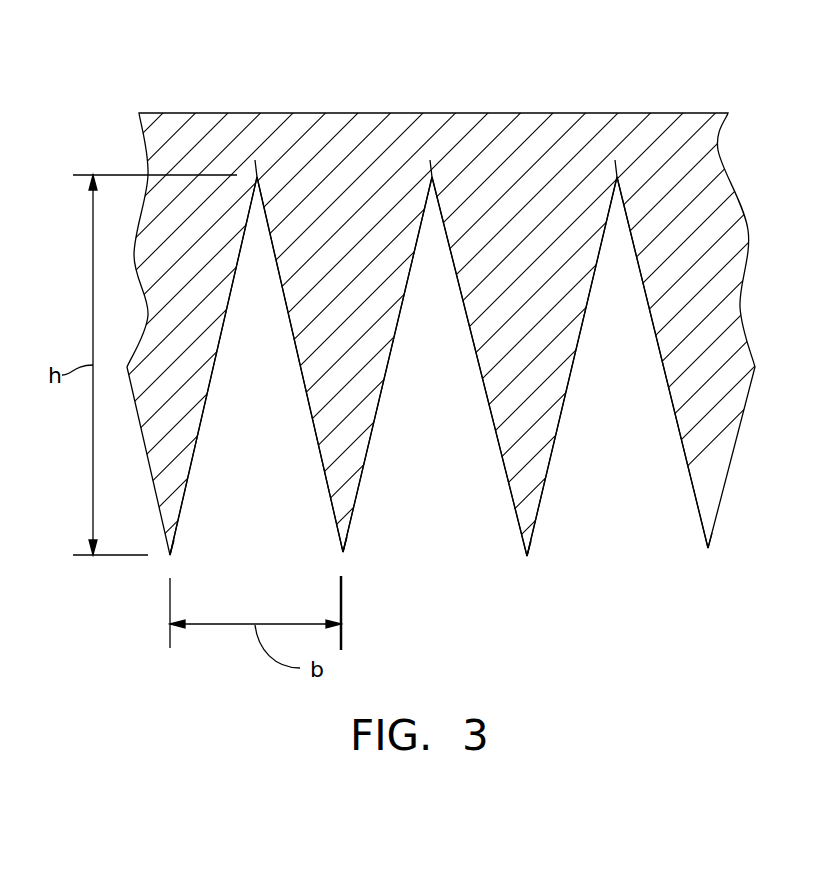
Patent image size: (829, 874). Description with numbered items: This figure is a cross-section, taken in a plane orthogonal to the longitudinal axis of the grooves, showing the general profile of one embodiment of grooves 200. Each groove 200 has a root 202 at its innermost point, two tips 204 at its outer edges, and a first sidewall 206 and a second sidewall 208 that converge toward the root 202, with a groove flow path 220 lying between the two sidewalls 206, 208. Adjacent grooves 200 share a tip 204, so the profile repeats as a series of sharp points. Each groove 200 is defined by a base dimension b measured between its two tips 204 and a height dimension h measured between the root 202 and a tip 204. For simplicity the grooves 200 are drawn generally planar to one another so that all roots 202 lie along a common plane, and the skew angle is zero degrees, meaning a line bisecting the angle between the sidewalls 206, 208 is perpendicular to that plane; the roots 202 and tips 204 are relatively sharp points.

The groove 200 is at (600, 68).
The root 202 is at (257, 177).
The tip 204 is at (170, 555).
The first sidewall 206 is at (197, 440).
The second sidewall 208 is at (692, 482).
The groove flow path 220 is at (277, 346).